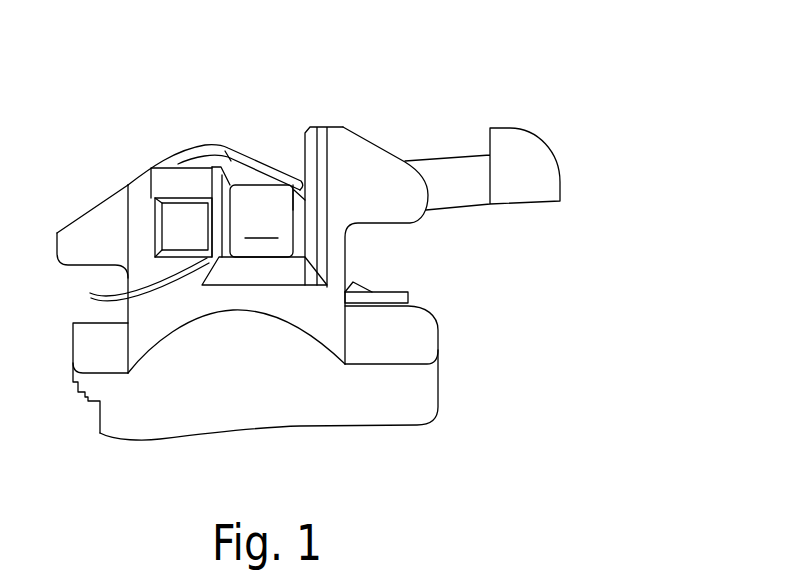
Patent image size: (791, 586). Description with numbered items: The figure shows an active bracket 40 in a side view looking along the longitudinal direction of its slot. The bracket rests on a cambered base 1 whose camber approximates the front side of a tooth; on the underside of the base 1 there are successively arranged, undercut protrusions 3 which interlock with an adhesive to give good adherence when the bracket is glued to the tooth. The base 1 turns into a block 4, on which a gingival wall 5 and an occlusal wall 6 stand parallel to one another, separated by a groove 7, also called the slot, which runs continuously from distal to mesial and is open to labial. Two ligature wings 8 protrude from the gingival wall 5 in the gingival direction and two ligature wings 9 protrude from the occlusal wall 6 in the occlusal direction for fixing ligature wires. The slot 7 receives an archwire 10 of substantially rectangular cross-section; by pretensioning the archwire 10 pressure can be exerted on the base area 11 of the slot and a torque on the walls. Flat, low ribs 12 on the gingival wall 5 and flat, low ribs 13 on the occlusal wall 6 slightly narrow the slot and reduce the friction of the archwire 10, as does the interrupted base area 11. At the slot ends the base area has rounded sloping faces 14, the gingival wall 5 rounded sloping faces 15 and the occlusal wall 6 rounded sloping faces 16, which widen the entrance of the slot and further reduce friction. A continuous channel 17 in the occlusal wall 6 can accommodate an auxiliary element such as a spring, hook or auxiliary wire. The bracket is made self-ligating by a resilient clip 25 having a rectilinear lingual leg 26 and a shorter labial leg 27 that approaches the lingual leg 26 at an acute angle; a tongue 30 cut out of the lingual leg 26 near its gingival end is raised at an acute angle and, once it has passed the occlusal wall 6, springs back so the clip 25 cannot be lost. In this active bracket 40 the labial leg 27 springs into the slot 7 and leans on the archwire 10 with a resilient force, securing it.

The base 1 is at (300, 408).
The protrusions 3 is at (88, 403).
The block 4 is at (143, 350).
The gingival wall 5 is at (360, 148).
The occlusal wall 6 is at (147, 190).
The groove 7 is at (252, 111).
The ligature wings 8 is at (408, 192).
The ligature wings 9 is at (73, 248).
The archwire 10 is at (261, 221).
The base area 11 is at (267, 263).
The ribs 12 is at (297, 244).
The ribs 13 is at (210, 155).
The rounded sloping faces 14 is at (253, 267).
The rounded sloping faces 15 is at (313, 130).
The rounded sloping faces 16 is at (134, 284).
The channel 17 is at (173, 218).
The clip 25 is at (220, 148).
The lingual leg 26 is at (397, 300).
The labial leg 27 is at (281, 160).
The tongue 30 is at (353, 284).
The active bracket 40 is at (567, 233).